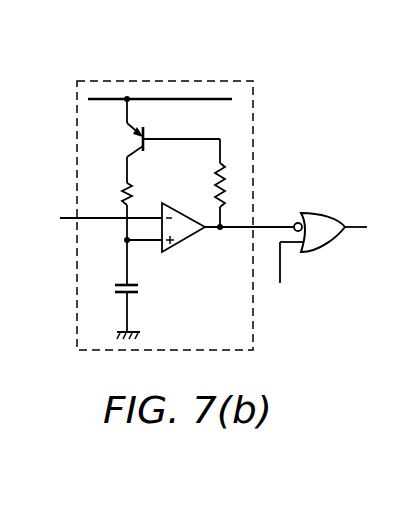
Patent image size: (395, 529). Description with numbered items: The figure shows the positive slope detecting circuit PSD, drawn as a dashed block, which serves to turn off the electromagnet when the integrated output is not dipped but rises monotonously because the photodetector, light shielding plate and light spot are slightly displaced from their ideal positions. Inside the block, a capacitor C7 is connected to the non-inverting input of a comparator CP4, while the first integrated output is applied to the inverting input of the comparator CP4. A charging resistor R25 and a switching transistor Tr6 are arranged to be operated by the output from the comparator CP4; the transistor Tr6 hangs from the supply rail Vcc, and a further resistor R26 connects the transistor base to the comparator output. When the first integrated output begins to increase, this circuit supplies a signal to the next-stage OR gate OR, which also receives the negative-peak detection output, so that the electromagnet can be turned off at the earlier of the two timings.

The positive slope detecting circuit PSD is at (165, 203).
The supply voltage rail Vcc is at (160, 109).
The switching transistor Tr6 is at (156, 141).
The charging resistor R25 is at (107, 234).
The resistor R26 is at (198, 183).
The comparator CP4 is at (176, 252).
The capacitor C7 is at (140, 309).
The OR gate OR is at (323, 248).